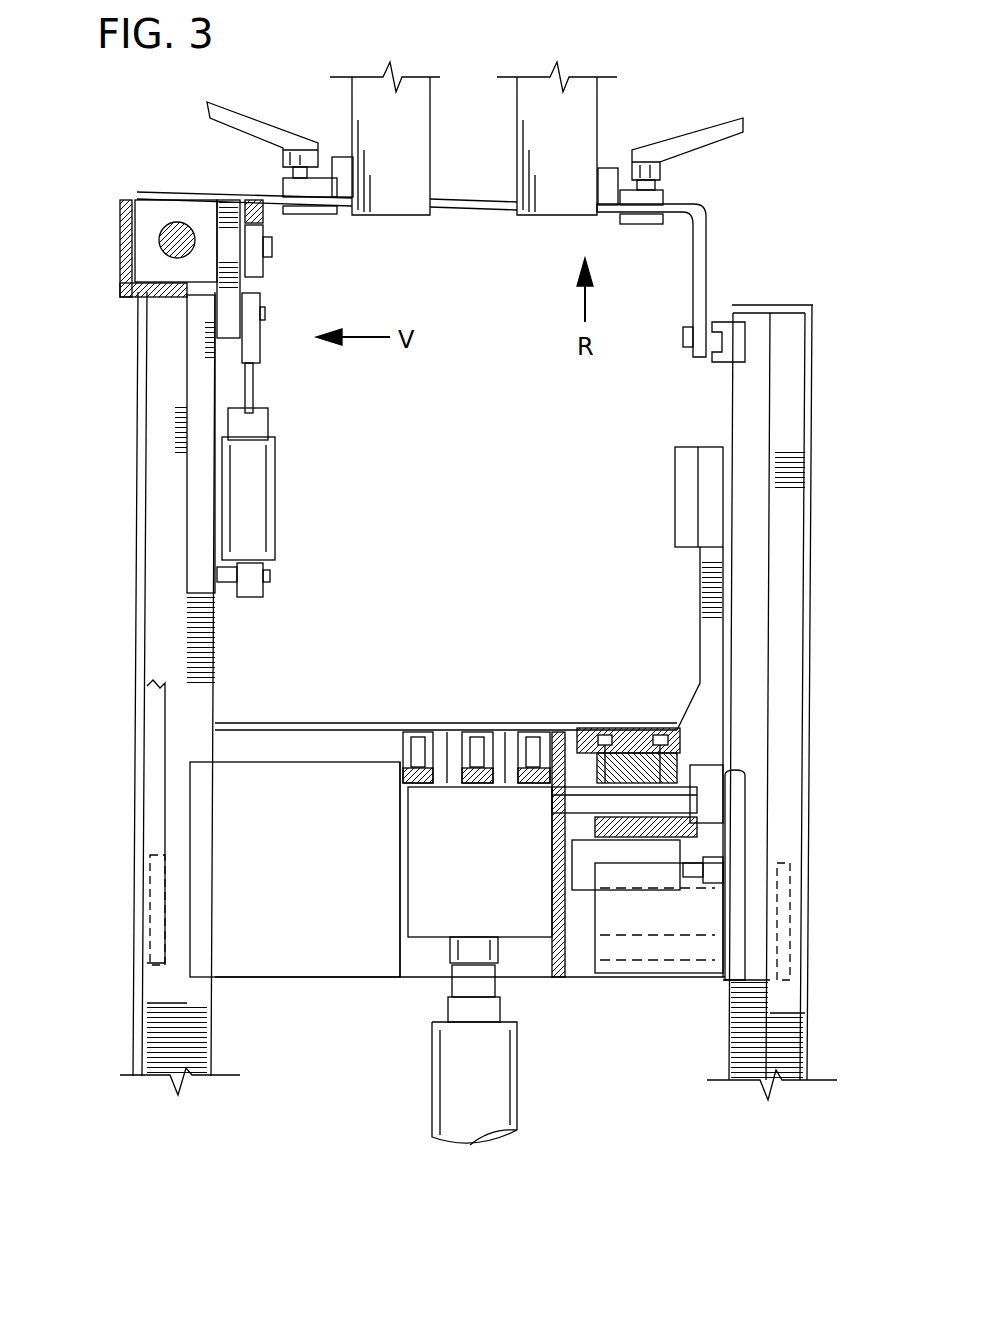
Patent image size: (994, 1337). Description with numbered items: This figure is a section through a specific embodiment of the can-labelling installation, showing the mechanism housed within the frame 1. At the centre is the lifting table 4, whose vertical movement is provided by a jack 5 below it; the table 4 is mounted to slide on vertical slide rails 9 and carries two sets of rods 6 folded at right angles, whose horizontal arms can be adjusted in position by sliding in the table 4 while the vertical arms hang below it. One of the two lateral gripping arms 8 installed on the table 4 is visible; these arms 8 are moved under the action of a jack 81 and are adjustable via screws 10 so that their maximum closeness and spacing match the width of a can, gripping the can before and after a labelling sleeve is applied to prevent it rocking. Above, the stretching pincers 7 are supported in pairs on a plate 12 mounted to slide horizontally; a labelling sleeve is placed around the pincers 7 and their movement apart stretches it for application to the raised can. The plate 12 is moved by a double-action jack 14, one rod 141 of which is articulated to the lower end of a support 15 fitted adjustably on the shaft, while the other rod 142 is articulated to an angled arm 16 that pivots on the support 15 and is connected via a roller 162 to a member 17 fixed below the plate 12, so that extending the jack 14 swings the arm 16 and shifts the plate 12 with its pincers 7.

The frame 1 is at (140, 395).
The lifting table 4 is at (322, 992).
The jack 5 is at (445, 1063).
The rods 6 is at (535, 733).
The pincers 7 is at (523, 100).
The lateral gripping arms 8 is at (675, 482).
The jack 81 is at (690, 848).
The vertical slide rails 9 is at (795, 722).
The screws 10 is at (665, 728).
The plate 12 is at (275, 195).
The jack 14 is at (257, 497).
The rod 141 is at (270, 598).
The cylinder rod clevis 142 is at (258, 348).
The support 15 is at (190, 438).
The angled arm 16 is at (230, 275).
The roller 162 is at (263, 237).
The member 17 is at (262, 207).